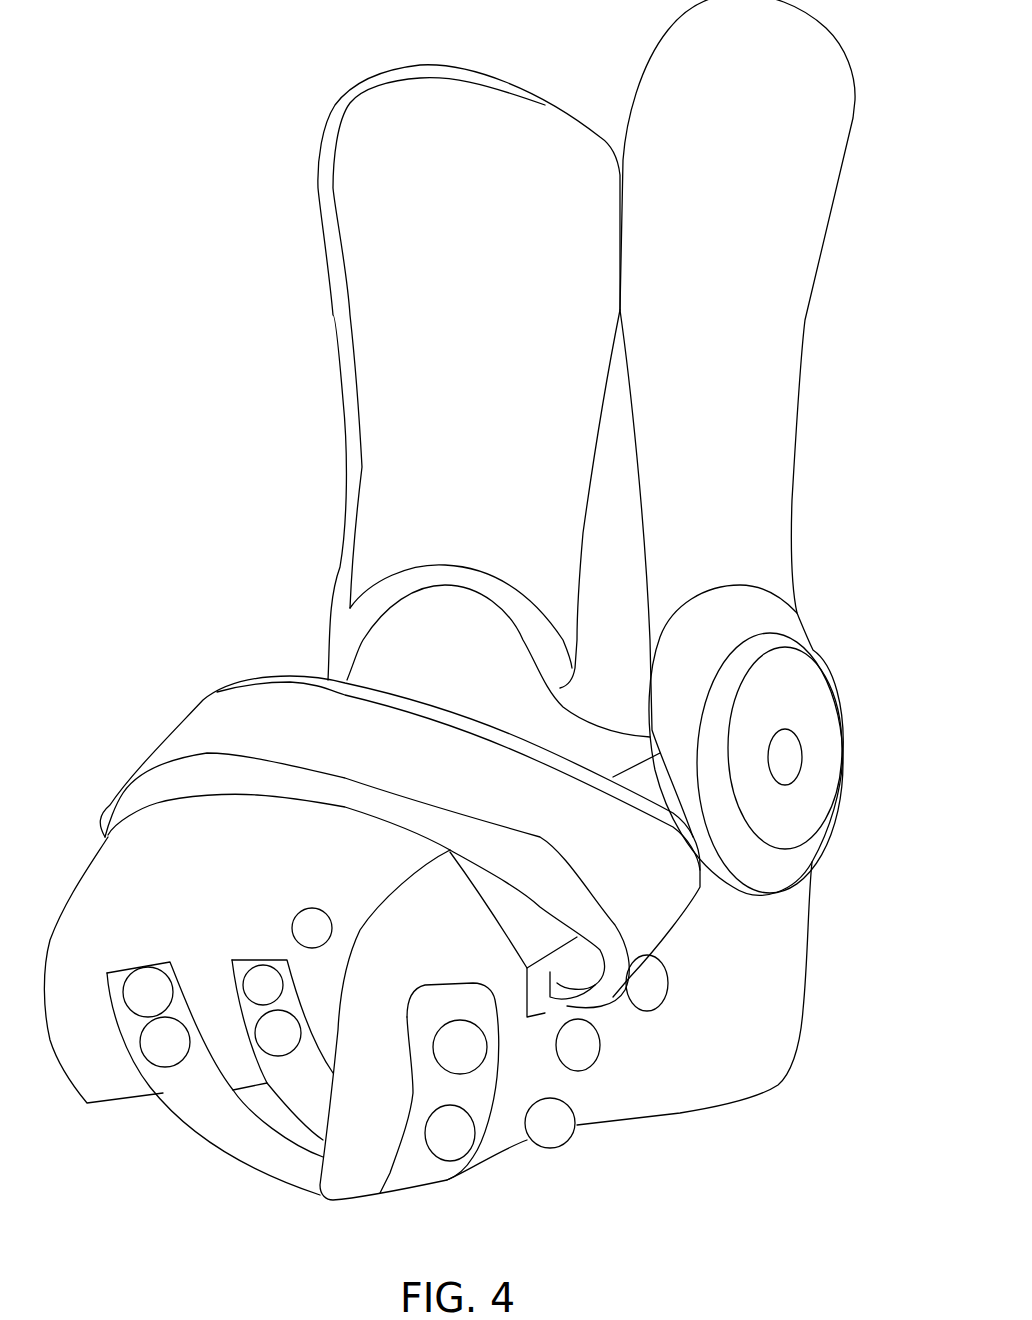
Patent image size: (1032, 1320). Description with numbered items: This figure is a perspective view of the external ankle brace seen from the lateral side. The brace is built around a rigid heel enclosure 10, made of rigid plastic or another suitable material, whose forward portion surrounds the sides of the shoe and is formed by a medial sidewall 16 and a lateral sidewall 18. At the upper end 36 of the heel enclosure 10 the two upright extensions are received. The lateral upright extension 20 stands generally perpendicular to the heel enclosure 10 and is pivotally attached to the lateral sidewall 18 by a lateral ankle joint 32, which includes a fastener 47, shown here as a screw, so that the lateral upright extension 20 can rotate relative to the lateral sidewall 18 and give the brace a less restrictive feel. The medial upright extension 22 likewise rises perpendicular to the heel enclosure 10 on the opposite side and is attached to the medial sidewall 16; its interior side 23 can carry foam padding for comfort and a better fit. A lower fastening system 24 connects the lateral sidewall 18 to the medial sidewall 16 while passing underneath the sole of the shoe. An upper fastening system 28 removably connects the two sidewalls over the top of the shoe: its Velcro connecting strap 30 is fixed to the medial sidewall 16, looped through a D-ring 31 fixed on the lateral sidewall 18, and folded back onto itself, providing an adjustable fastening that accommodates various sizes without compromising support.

The rigid heel enclosure 10 is at (470, 600).
The medial sidewall 16 is at (129, 873).
The lateral sidewall 18 is at (745, 1010).
The lateral upright extension 20 is at (780, 295).
The medial upright extension 22 is at (331, 358).
The interior side 23 is at (396, 262).
The lower fastening system 24 is at (281, 1105).
The upper fastening system 28 is at (697, 913).
The connecting strap 30 is at (213, 730).
The D-ring 31 is at (571, 1013).
The lateral ankle joint 32 is at (839, 810).
The upper end 36 is at (440, 590).
The fastener 47 is at (781, 757).